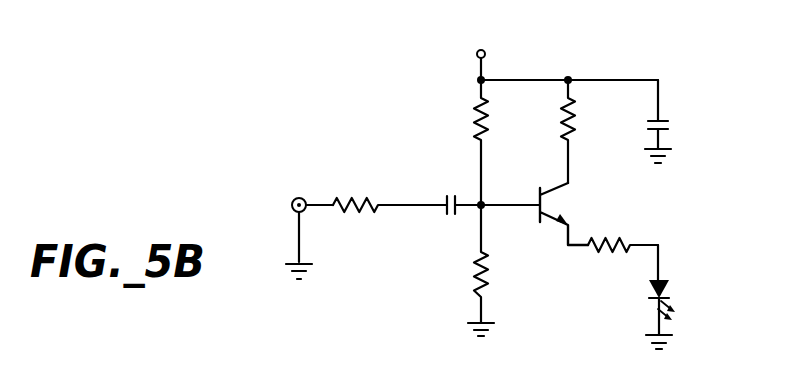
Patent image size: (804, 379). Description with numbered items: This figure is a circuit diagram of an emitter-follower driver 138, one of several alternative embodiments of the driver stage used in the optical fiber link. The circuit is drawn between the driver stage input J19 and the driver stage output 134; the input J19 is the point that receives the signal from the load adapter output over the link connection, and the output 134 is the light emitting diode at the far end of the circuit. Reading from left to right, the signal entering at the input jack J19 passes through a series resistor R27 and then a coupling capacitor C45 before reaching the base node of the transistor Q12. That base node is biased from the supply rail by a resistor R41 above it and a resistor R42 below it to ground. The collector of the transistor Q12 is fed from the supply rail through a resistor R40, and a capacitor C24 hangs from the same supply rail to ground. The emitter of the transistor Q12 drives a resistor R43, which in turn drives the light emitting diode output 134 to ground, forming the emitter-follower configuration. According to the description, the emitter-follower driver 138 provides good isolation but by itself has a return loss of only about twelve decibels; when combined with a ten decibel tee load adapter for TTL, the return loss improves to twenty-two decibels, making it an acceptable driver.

The emitter-follower driver 138 is at (331, 116).
The resistor R41 is at (474, 120).
The resistor R40 is at (578, 113).
The capacitor C24 is at (664, 121).
The driver stage input J19 is at (296, 196).
The resistor R27 is at (366, 195).
The capacitor C45 is at (441, 213).
The transistor Q12 is at (548, 208).
The resistor R43 is at (622, 236).
The driver stage output 134 is at (667, 282).
The resistor R42 is at (474, 290).